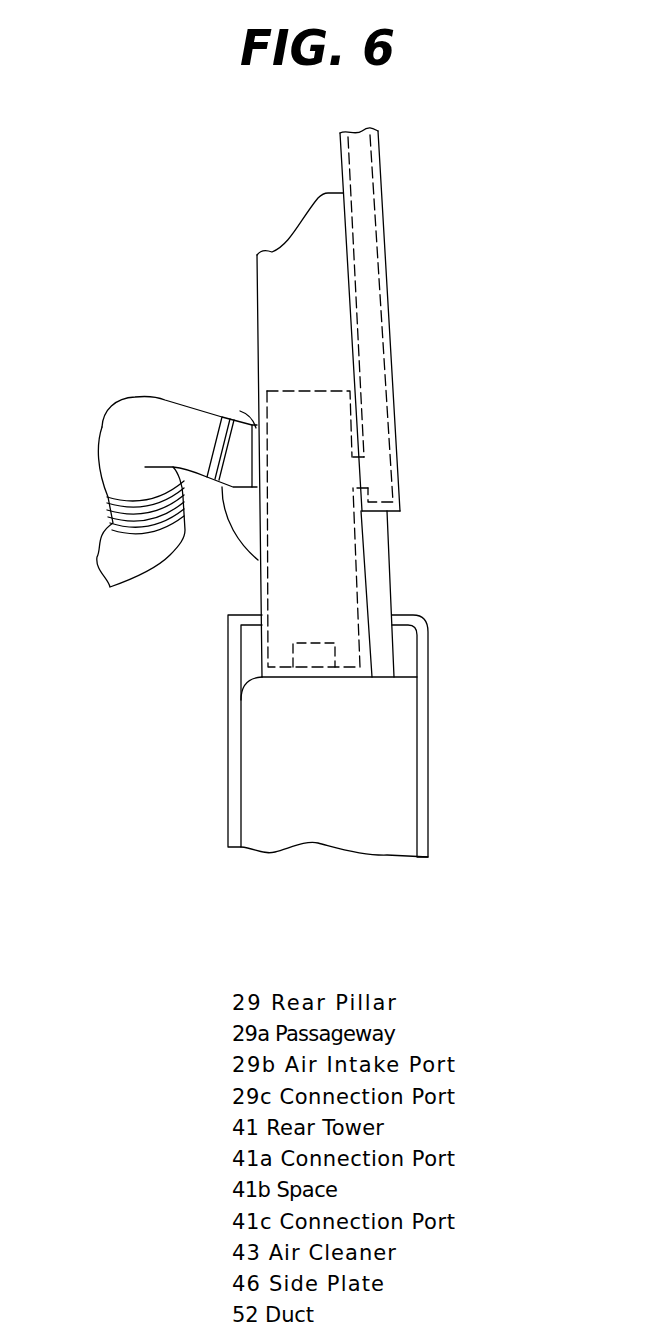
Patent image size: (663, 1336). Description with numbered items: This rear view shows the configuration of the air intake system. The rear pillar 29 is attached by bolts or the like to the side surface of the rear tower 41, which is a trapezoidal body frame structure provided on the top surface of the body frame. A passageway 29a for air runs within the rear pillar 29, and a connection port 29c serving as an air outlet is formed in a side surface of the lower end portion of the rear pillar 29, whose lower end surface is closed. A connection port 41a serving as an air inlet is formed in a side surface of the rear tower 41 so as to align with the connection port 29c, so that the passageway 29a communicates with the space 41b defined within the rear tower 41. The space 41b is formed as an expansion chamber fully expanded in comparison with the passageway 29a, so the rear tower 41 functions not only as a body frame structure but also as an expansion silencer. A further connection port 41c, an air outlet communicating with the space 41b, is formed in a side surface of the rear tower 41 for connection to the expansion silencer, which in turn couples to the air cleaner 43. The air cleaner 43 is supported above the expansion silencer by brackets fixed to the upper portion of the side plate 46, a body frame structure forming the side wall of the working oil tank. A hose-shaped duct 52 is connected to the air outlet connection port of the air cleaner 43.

The rear pillar 29 is at (385, 270).
The passageway 29a is at (373, 403).
The connection port 29c is at (352, 471).
The rear tower 41 is at (363, 545).
The connection port 41a is at (352, 471).
The space 41b is at (360, 583).
The connection port 41c is at (327, 657).
The air cleaner 43 is at (250, 410).
The side plate 46 is at (425, 762).
The hose-shaped duct 52 is at (128, 417).